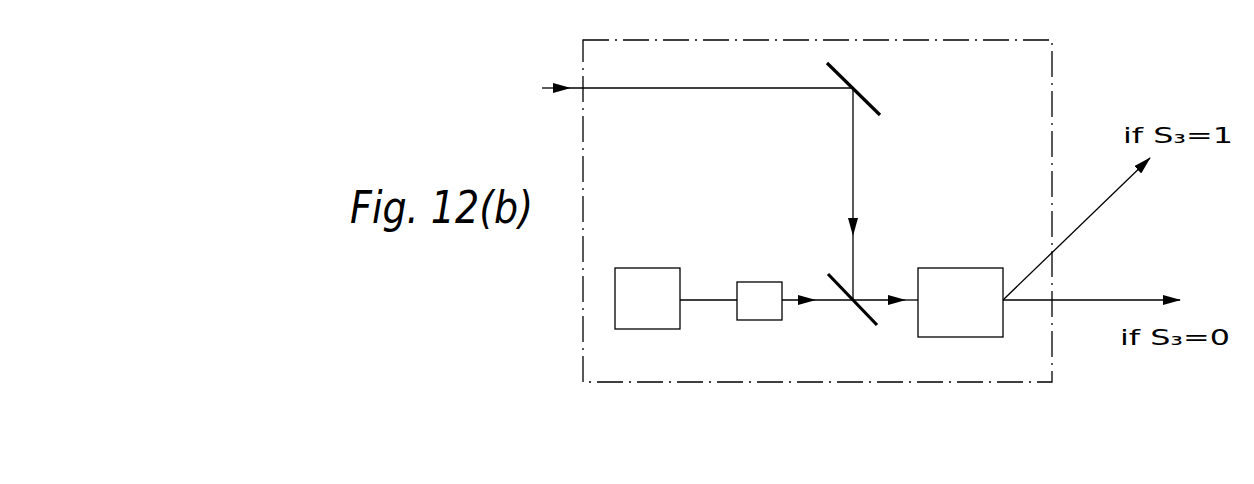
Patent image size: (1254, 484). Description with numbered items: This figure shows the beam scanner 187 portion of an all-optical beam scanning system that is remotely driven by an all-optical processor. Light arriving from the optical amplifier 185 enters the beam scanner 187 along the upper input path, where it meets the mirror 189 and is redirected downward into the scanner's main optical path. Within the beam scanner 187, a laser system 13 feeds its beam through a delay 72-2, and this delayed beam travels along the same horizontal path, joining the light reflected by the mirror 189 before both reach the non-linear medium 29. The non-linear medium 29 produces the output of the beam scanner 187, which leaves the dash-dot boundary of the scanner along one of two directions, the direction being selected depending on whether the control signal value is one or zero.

The optical amplifier 185 is at (505, 158).
The beam scanner 187 is at (582, 345).
The mirror 189 is at (880, 108).
The laser system 13 is at (660, 313).
The delay 72-2 is at (758, 282).
The non-linear medium 29 is at (957, 268).